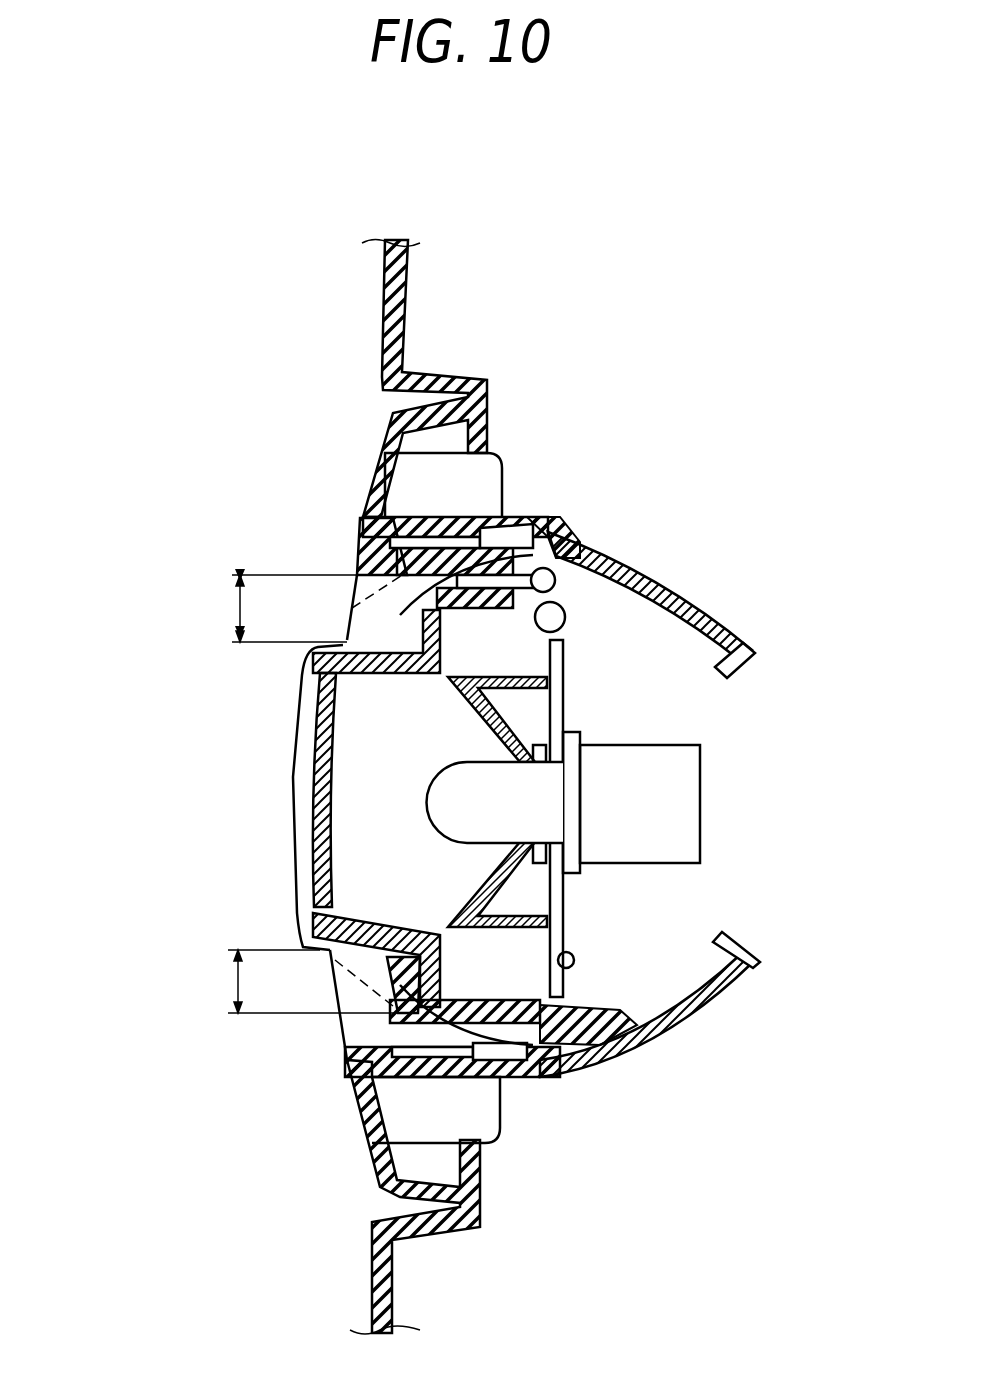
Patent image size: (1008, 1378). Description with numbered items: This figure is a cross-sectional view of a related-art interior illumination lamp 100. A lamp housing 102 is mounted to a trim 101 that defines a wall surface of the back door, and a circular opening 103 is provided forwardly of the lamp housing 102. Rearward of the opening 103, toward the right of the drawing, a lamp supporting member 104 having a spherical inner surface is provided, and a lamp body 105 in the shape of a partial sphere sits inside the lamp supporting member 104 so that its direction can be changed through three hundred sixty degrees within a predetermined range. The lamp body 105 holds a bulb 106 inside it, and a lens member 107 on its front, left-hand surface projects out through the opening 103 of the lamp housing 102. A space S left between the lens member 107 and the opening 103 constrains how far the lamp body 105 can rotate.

The interior illumination lamp 100 is at (168, 372).
The trim 101 is at (385, 316).
The lamp housing 102 is at (372, 1173).
The circular opening 103 is at (352, 568).
The lamp supporting member 104 is at (680, 587).
The lamp body 105 is at (700, 708).
The bulb 106 is at (453, 777).
The lens member 107 is at (310, 817).